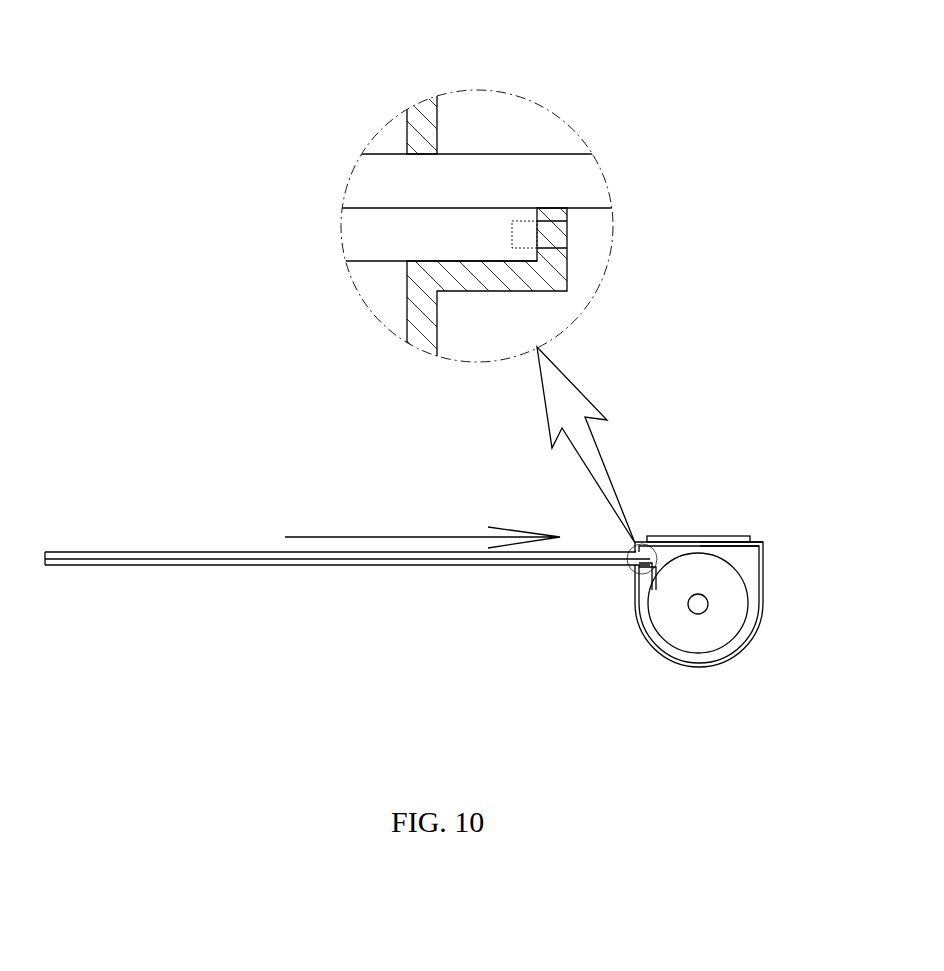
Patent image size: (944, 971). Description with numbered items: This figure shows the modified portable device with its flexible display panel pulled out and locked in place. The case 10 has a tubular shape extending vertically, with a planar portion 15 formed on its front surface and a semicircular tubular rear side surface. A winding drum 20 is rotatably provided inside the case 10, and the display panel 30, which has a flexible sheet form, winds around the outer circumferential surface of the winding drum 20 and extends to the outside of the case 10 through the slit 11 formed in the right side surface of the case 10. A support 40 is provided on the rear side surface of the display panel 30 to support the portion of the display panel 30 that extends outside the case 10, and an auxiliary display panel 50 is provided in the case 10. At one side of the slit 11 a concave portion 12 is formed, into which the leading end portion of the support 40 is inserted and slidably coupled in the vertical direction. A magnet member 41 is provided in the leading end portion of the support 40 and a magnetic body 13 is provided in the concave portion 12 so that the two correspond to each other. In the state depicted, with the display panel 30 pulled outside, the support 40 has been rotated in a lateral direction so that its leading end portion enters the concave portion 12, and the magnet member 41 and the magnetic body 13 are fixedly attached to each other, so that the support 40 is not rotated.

The case 10 is at (407, 133).
The slit 11 is at (620, 557).
The concave portion 12 is at (472, 262).
The magnetic body 13 is at (560, 210).
The planar portion 15 is at (718, 543).
The winding drum 20 is at (697, 655).
The display panel 30 is at (518, 153).
The support 40 is at (375, 262).
The magnet member 41 is at (525, 248).
The auxiliary display panel 50 is at (683, 536).